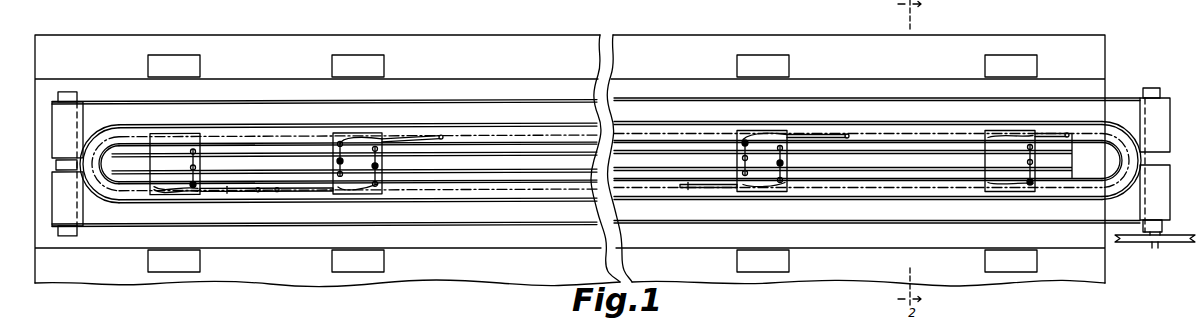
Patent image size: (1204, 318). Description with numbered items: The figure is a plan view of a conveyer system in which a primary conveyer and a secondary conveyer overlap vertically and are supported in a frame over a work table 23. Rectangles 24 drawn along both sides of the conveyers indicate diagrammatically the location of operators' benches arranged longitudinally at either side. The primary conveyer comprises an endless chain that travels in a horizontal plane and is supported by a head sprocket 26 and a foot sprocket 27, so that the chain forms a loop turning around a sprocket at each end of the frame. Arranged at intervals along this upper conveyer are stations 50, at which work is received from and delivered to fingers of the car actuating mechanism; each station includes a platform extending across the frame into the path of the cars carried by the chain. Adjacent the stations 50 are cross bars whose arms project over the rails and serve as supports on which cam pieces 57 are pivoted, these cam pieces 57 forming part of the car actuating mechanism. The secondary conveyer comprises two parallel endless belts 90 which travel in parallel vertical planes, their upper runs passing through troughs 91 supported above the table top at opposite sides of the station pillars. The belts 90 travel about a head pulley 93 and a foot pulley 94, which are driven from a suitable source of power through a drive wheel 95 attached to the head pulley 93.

The work table 23 is at (570, 161).
The rectangles indicating operators' benches 24 is at (592, 163).
The head sprocket 26 is at (1136, 182).
The foot sprocket 27 is at (108, 140).
The station 50 is at (1015, 168).
The cam piece 57 is at (1047, 134).
The endless belt 90 is at (72, 220).
The trough 91 is at (1114, 100).
The head pulley 93 is at (1157, 157).
The foot pulley 94 is at (62, 163).
The drive wheel 95 is at (1143, 241).